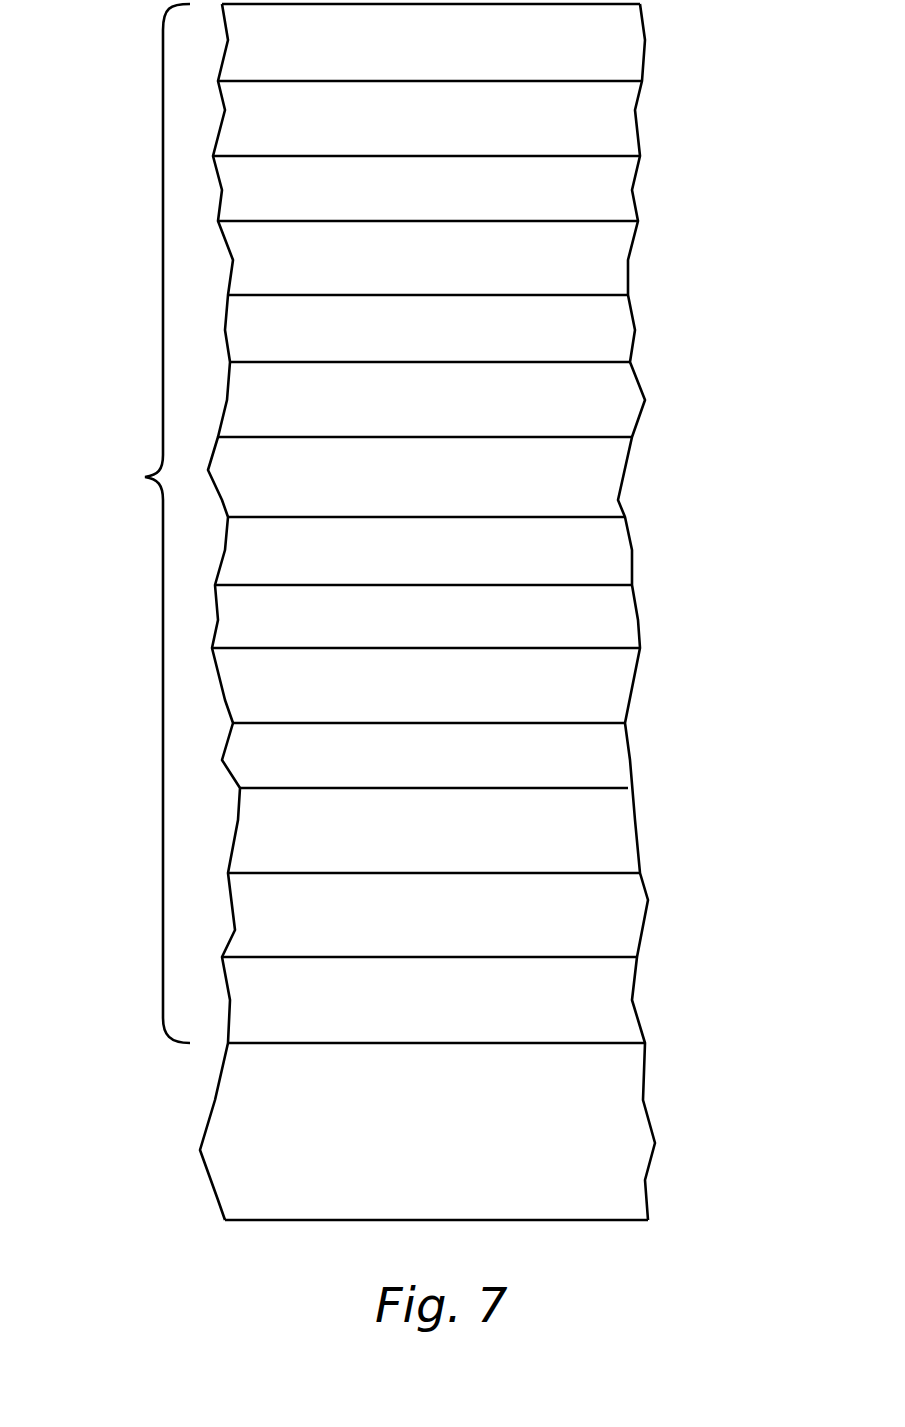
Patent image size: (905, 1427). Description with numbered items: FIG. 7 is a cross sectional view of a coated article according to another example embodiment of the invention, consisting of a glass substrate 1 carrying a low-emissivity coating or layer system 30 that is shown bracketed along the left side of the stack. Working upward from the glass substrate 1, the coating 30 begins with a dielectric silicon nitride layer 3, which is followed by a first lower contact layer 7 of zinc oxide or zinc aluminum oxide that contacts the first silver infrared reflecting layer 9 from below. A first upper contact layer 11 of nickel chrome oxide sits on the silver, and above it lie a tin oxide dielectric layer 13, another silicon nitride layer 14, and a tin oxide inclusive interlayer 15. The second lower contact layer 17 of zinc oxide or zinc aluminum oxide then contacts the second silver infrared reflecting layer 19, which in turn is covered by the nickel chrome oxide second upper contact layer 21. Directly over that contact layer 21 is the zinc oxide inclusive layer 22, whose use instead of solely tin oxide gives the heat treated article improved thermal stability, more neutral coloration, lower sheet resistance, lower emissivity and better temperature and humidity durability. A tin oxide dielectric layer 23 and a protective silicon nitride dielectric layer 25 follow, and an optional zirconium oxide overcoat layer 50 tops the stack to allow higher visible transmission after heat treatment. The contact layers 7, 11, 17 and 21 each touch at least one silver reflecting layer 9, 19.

The substrate 1 is at (573, 1140).
The dielectric silicon nitride layer 3 is at (580, 993).
The first lower contact layer 7 is at (590, 920).
The first infrared (IR) reflecting layer 9 is at (582, 835).
The first upper contact layer 11 is at (592, 757).
The dielectric layer 13 is at (580, 686).
The silicon nitride layer 14 is at (582, 612).
The tin oxide inclusive interlayer 15 is at (560, 560).
The second lower contact layer 17 is at (580, 480).
The second infrared (IR) reflecting layer 19 is at (588, 400).
The second upper contact layer 21 is at (588, 320).
The zinc oxide inclusive layer 22 is at (578, 258).
The dielectric layer 23 is at (580, 193).
The protective dielectric layer 25 is at (585, 127).
The zirconium oxide layer 50 is at (607, 55).
The coating (or layer system) 30 is at (145, 477).